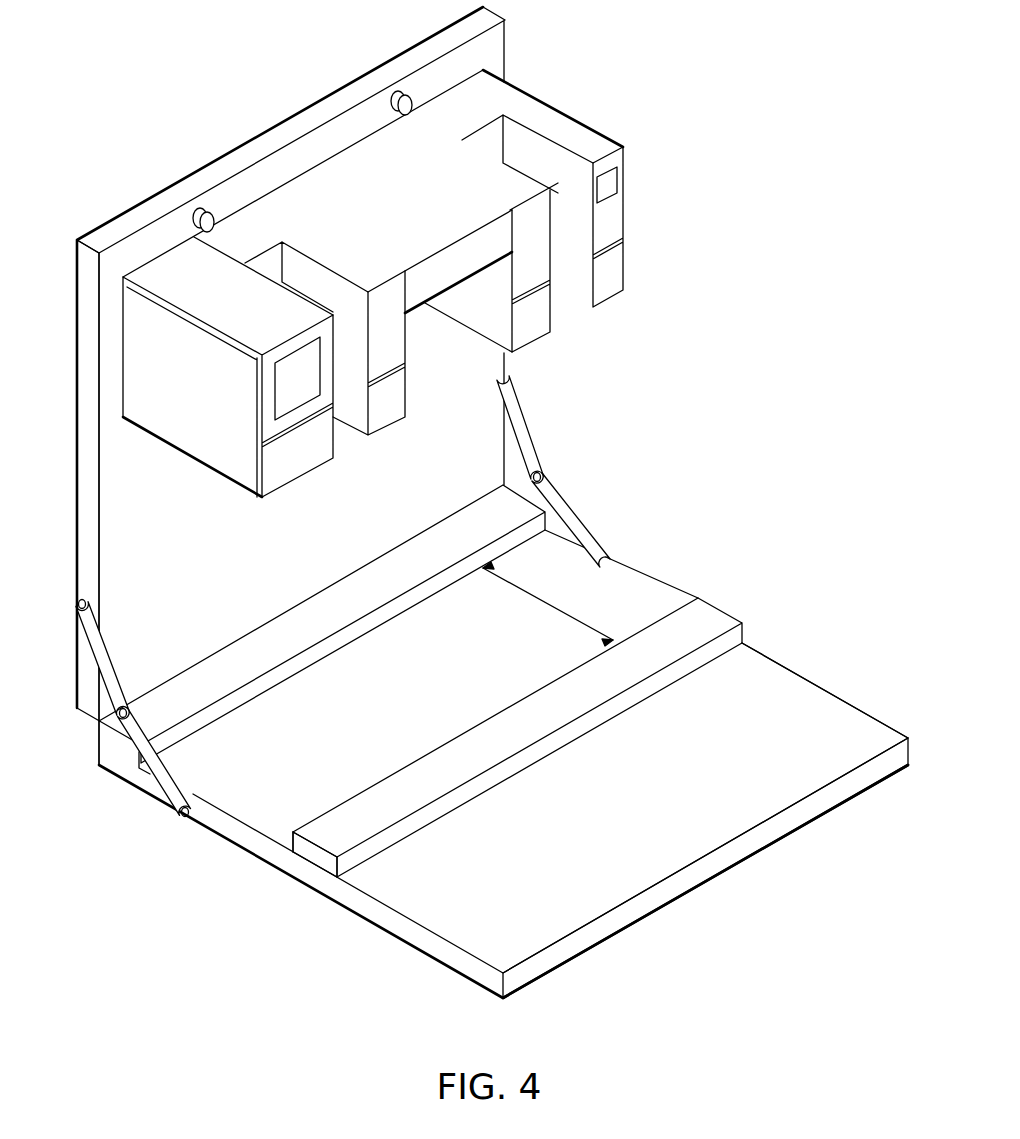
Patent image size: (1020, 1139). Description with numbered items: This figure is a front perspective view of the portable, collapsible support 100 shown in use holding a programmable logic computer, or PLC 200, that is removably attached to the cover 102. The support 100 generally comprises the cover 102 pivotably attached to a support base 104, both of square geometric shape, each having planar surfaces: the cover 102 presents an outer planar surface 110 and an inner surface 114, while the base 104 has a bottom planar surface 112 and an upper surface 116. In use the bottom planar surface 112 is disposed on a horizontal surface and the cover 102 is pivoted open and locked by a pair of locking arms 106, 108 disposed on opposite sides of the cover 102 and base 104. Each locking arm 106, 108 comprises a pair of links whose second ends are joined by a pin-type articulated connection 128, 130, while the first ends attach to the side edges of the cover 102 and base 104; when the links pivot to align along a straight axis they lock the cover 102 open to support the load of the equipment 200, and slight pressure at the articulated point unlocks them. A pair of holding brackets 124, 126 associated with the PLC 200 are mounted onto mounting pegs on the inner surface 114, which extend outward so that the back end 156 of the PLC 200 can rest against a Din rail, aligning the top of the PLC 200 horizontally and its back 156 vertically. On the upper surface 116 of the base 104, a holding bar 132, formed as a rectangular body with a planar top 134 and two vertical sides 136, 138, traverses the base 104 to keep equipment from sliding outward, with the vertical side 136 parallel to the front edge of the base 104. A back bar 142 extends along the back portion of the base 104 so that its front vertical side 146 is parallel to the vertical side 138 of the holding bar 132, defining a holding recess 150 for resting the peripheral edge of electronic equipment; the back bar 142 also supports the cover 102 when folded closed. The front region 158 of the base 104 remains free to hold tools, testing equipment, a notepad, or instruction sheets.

The portable, collapsible support 100 is at (230, 46).
The cover 102 is at (74, 398).
The support base 104 is at (854, 698).
The locking arm 106 is at (535, 430).
The locking arm 108 is at (100, 684).
The planar surface 110 is at (75, 250).
The bottom planar surface 112 is at (868, 795).
The inner surface 114 is at (116, 558).
The upper surface 116 is at (780, 695).
The holding bracket 124 is at (193, 229).
The holding bracket 126 is at (398, 104).
The articulated connection 128 is at (546, 468).
The articulated connection 130 is at (118, 717).
The holding bar 132 is at (728, 603).
The planar top 134 is at (337, 830).
The vertical side 136 is at (347, 860).
The vertical side 138 is at (290, 836).
The back bar 142 is at (124, 757).
The front vertical side 146 is at (176, 803).
The holding recess 150 is at (545, 598).
The back end of the PLC 156 is at (122, 360).
The front region 158 is at (695, 812).
The programmable logic computer (PLC) 200 is at (560, 106).